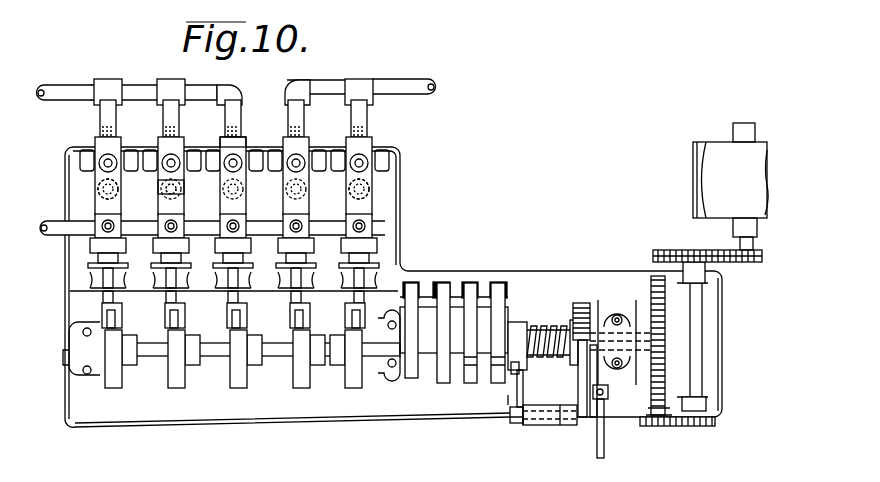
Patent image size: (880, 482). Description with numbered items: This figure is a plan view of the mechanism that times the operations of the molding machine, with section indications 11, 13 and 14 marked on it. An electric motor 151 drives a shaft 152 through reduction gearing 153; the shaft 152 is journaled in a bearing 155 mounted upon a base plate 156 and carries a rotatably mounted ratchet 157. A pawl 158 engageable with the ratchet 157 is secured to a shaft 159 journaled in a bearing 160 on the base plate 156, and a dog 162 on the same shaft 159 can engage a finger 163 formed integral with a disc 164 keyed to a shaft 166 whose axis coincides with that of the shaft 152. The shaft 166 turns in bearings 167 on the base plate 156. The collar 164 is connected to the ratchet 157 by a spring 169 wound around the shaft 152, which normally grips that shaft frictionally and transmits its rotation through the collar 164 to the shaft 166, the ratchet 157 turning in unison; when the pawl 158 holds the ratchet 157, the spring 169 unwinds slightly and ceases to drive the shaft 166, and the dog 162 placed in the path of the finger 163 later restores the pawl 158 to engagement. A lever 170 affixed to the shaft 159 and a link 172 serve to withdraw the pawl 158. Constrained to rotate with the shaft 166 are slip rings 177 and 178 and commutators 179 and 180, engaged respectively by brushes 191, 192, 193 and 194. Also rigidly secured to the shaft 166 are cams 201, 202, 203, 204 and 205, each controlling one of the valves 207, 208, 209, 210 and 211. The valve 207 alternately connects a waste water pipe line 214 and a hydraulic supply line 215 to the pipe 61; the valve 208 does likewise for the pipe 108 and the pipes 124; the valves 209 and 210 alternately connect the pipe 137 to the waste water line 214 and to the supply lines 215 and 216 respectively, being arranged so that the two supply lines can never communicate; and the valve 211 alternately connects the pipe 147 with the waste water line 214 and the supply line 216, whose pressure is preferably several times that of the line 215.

The pipe 61 is at (96, 185).
The pipe 108 is at (165, 200).
The pipes 124 is at (184, 186).
The pipe 137 is at (261, 138).
The pipe 147 is at (368, 188).
The electric motor 151 is at (722, 157).
The shaft 152 is at (614, 318).
The reduction gearing 153 is at (666, 318).
The bearing 155 is at (652, 410).
The base plate 156 is at (712, 376).
The ratchet 157 is at (578, 303).
The pawl 158 is at (582, 392).
The shaft 159 is at (566, 427).
The bearing 160 is at (536, 428).
The dog 162 is at (510, 397).
The finger 163 is at (520, 368).
The disc 164 is at (518, 322).
The shaft 166 is at (217, 352).
The bearings 167 is at (84, 350).
The spring 169 is at (545, 328).
The lever 170 is at (606, 425).
The link 172 is at (606, 447).
The slip ring 177 is at (410, 380).
The slip ring 178 is at (442, 385).
The commutator 179 is at (469, 385).
The commutator 180 is at (498, 385).
The brush 191 is at (412, 297).
The brush 192 is at (440, 290).
The brush 193 is at (468, 290).
The brush 194 is at (494, 290).
The cam 201 is at (113, 383).
The cam 202 is at (176, 383).
The cam 203 is at (238, 383).
The cam 204 is at (304, 370).
The cam 205 is at (362, 365).
The valve 207 is at (102, 243).
The valve 208 is at (160, 243).
The valve 209 is at (225, 247).
The valve 210 is at (290, 240).
The valve 211 is at (352, 240).
The waste water pipe line 214 is at (45, 233).
The hydraulic supply line 215 is at (59, 89).
The hydraulic supply line 216 is at (409, 83).
The section line 11 is at (600, 262).
The section line 13 is at (597, 197).
The section line 14 is at (497, 203).